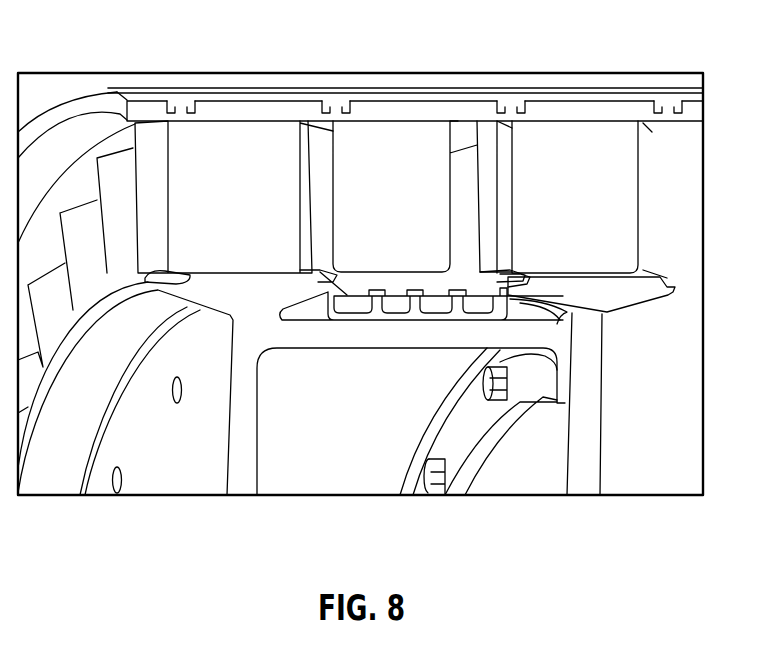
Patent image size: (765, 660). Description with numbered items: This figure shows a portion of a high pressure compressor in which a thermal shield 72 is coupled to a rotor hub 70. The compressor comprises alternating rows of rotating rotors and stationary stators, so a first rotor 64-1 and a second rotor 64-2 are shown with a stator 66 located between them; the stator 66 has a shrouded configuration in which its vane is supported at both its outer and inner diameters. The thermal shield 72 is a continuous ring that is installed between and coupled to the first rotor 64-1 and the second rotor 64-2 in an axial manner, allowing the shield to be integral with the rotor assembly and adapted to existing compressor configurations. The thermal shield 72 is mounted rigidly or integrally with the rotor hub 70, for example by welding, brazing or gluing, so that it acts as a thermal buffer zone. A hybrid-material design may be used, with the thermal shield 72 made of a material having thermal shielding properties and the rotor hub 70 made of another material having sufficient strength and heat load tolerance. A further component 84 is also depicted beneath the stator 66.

The first rotor 64-1 is at (196, 137).
The stator 66 is at (410, 132).
The second rotor 64-2 is at (598, 142).
The thermal shield 72 is at (610, 312).
The rotor hub 70 is at (590, 427).
The heat sink tray 84 is at (375, 322).